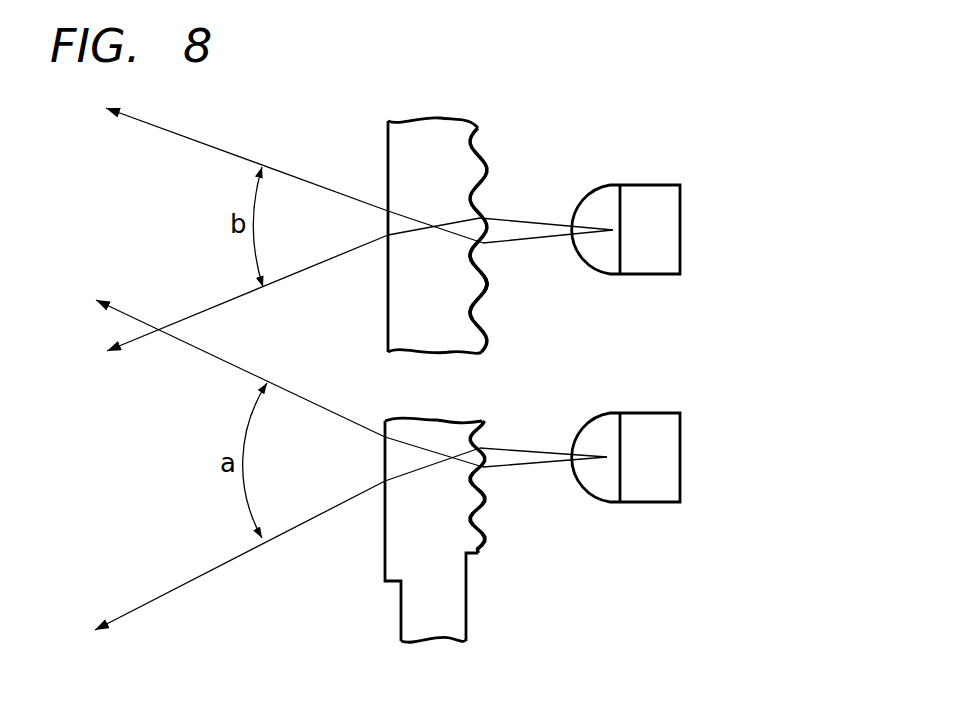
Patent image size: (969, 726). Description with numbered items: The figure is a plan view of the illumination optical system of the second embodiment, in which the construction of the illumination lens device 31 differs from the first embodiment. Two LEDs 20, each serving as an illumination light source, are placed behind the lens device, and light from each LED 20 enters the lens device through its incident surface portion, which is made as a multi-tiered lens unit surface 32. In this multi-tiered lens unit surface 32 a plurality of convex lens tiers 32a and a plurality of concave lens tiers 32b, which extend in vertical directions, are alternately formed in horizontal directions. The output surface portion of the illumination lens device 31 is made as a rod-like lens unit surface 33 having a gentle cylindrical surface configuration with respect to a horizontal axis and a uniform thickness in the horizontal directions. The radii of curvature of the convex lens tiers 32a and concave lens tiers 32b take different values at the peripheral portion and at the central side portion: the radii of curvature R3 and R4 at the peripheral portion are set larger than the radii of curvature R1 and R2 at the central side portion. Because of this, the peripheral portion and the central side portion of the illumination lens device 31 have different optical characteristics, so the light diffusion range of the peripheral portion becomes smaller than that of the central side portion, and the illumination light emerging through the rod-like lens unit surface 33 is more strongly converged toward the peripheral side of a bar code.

The LED 20 is at (680, 233).
The illumination lens device 31 is at (444, 193).
The multi-tiered lens unit surface 32 is at (486, 163).
The convex lens tier 32a is at (488, 293).
The concave lens tier 32b is at (475, 317).
The rod-like lens unit surface 33 is at (388, 322).
The radius of curvature at central side portion R1 is at (480, 500).
The radius of curvature at central side portion R2 is at (481, 483).
The radius of curvature at peripheral portion R3 is at (482, 287).
The radius of curvature at peripheral portion R4 is at (481, 262).